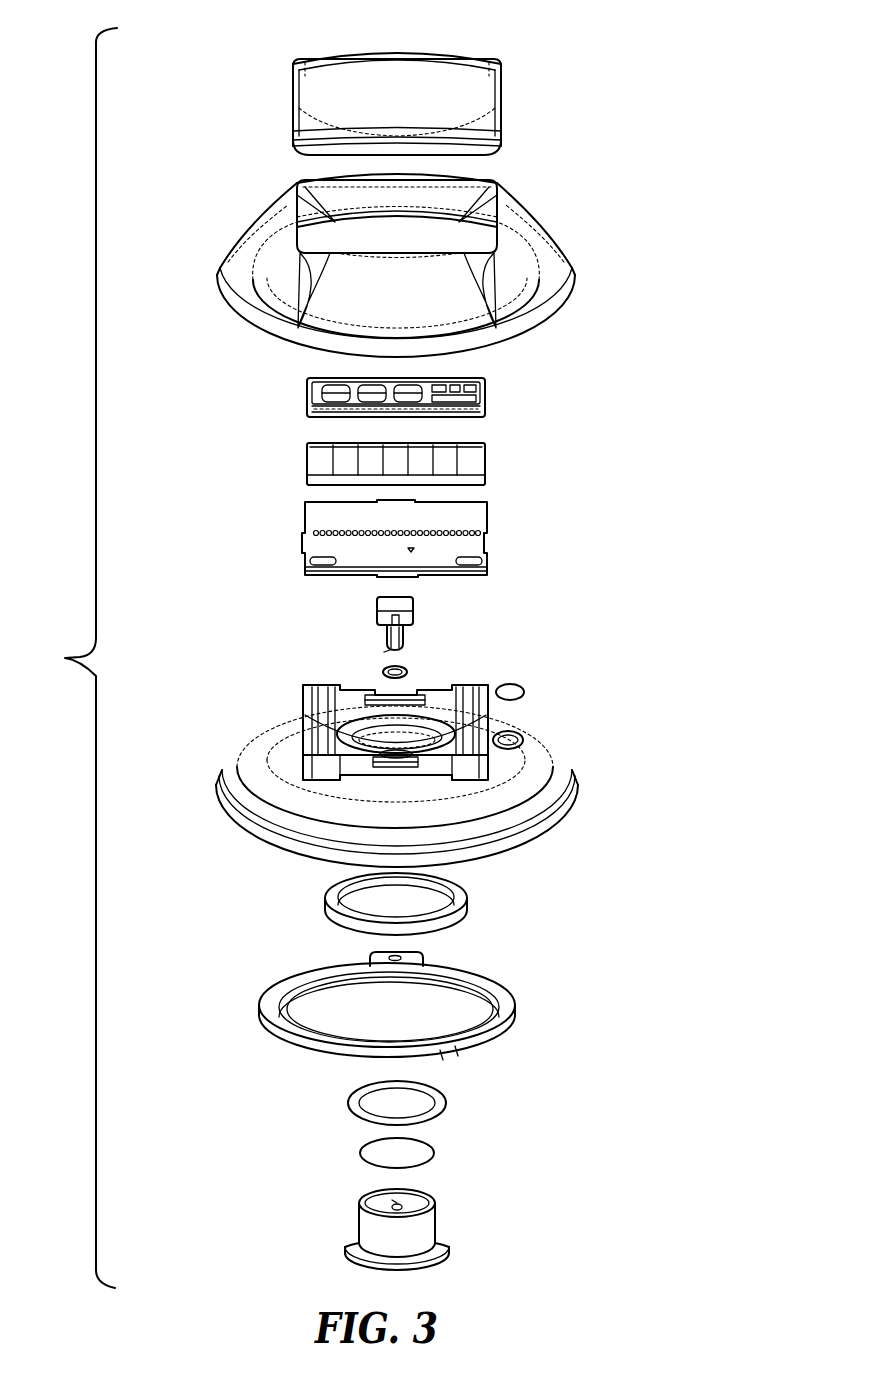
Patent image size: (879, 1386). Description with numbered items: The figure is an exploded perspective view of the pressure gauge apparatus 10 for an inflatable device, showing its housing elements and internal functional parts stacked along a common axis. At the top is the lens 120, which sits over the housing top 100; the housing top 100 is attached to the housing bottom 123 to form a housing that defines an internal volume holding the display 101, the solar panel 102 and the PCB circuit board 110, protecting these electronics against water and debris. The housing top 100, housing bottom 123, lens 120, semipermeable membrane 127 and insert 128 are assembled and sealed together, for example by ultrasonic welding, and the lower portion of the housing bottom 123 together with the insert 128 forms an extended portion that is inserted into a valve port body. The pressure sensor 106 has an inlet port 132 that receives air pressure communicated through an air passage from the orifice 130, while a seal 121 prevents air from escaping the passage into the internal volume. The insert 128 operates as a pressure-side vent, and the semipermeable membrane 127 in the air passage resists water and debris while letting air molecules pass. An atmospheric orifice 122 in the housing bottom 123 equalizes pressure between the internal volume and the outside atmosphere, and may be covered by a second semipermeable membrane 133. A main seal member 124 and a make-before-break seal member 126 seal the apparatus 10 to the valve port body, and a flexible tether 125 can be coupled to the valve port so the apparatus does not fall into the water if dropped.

The pressure gauge apparatus 10 is at (70, 658).
The lens 120 is at (503, 113).
The housing top 100 is at (575, 278).
The display 101 is at (487, 398).
The solar panel 102 is at (487, 468).
The PCB circuit board 110 is at (487, 528).
The pressure sensor 106 is at (414, 628).
The inlet port 132 is at (383, 657).
The seal 121 is at (407, 668).
The semipermeable membrane 133 is at (524, 690).
The atmospheric orifice 122 is at (523, 738).
The housing bottom 123 is at (577, 768).
The main seal member 124 is at (467, 900).
The tether 125 is at (515, 1010).
The make-before-break seal member 126 is at (445, 1100).
The semipermeable membrane 127 is at (433, 1152).
The insert 128 is at (437, 1205).
The orifice 130 is at (387, 1190).